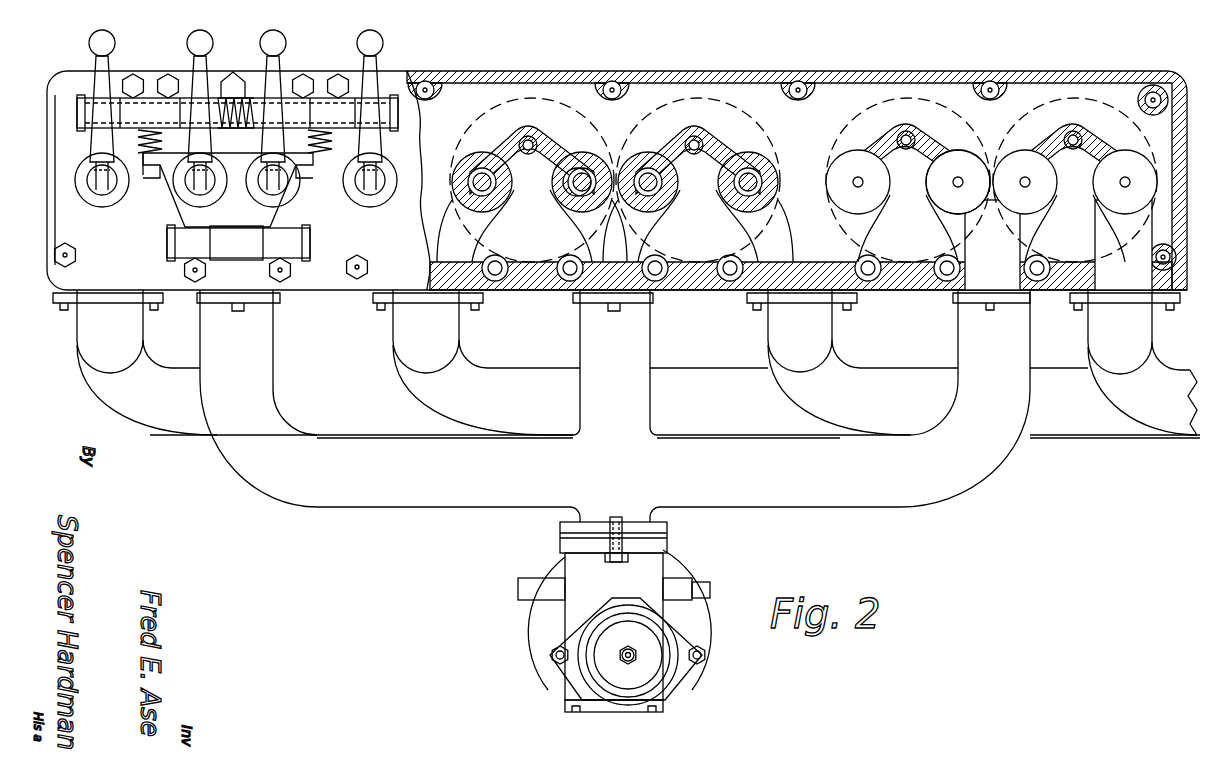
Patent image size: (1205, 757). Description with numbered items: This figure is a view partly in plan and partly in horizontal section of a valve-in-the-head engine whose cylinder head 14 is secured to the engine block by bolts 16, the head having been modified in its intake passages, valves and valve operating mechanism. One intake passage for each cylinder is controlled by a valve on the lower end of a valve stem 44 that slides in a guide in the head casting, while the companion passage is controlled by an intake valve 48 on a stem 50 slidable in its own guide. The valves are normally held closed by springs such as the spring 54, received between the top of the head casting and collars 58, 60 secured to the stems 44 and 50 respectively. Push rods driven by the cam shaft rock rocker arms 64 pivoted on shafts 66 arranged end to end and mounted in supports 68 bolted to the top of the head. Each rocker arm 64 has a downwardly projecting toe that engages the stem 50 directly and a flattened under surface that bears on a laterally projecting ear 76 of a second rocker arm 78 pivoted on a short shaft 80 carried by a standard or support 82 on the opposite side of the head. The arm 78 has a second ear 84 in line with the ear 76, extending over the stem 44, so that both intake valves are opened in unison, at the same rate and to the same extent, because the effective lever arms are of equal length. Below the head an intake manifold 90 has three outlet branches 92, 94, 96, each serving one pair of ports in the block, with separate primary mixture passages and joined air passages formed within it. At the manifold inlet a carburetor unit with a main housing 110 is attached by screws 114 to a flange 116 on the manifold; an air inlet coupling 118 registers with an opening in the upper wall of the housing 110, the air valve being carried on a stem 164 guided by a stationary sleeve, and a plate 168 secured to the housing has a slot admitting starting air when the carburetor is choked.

The cylinder head 14 is at (118, 291).
The bolts 16 is at (71, 254).
The valve stem 44 is at (526, 142).
The intake valve 48 is at (968, 160).
The stem 50 is at (577, 170).
The spring 54 is at (155, 132).
The collar 58 is at (143, 172).
The collar 60 is at (376, 196).
The rocker arm 64 is at (206, 60).
The shaft 66 is at (318, 110).
The support 68 is at (152, 78).
The laterally projecting ear 76 is at (208, 160).
The rocker arm 78 is at (282, 212).
The short shaft 80 is at (167, 246).
The standard or support 82 is at (292, 272).
The laterally projecting ear 84 is at (327, 160).
The intake manifold 90 is at (403, 506).
The outlet branch 92 is at (268, 347).
The outlet branch 94 is at (642, 340).
The outlet branch 96 is at (946, 338).
The main housing 110 is at (656, 568).
The screws 114 is at (616, 562).
The flange 116 is at (595, 525).
The air inlet coupling 118 is at (607, 626).
The stem 164 is at (628, 664).
The plate 168 is at (590, 713).